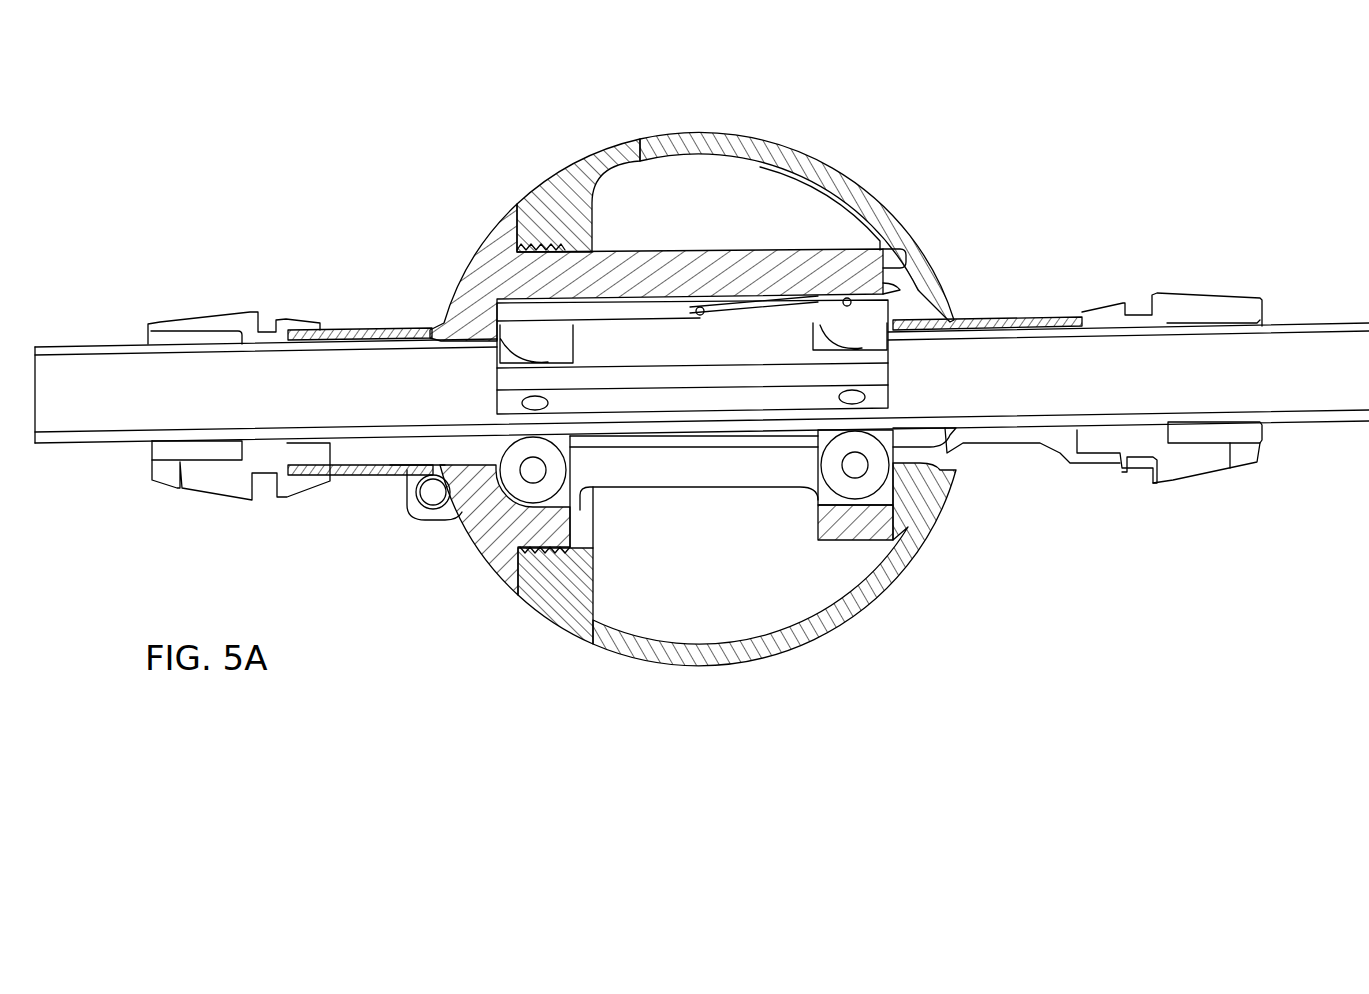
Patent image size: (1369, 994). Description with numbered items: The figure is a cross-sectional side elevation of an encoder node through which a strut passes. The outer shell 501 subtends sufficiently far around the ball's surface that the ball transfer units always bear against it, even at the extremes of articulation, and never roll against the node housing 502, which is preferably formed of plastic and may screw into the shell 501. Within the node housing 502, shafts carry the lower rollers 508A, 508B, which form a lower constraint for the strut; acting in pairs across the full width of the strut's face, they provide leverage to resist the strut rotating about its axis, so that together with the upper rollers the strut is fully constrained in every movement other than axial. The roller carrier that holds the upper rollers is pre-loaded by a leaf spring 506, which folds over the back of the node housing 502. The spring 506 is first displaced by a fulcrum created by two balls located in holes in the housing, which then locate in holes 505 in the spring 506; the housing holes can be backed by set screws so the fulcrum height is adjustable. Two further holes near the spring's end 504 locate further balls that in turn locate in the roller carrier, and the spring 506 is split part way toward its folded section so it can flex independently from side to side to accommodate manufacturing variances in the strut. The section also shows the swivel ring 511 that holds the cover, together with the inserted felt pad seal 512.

The shell 501 is at (823, 160).
The node housing 502 is at (585, 217).
The end of the spring 504 is at (685, 270).
The holes in the spring 505 is at (843, 290).
The leaf spring 506 is at (770, 307).
The roller 508A is at (533, 470).
The roller 508B is at (855, 465).
The swivel ring 511 is at (1122, 468).
The felt pad seal 512 is at (1220, 428).